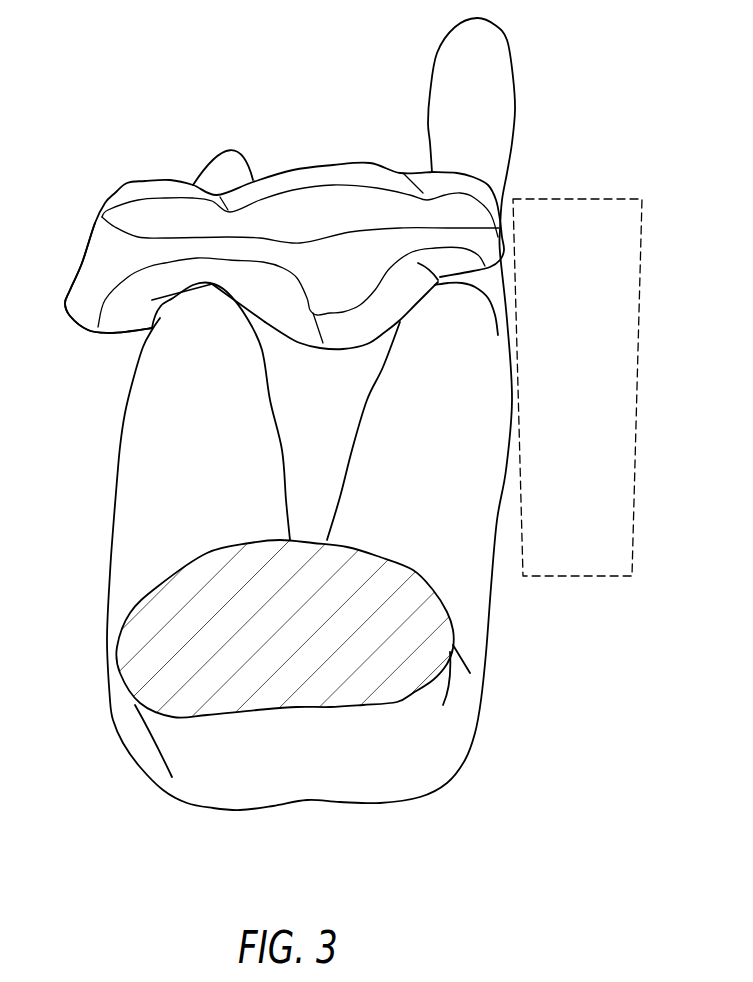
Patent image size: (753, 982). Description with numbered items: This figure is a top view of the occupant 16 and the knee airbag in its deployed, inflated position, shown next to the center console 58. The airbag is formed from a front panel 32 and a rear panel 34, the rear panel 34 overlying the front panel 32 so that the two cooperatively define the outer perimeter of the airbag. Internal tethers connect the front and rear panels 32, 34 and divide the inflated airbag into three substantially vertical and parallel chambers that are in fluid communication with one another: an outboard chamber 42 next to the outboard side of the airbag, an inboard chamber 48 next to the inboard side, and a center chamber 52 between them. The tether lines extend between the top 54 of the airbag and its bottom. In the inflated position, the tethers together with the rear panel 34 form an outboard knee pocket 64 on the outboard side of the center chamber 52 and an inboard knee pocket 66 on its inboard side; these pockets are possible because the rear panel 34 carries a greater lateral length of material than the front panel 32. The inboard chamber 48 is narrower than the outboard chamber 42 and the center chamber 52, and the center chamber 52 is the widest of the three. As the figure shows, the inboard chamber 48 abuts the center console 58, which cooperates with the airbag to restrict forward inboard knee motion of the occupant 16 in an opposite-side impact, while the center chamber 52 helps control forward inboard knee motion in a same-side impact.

The occupant 16 is at (115, 495).
The front panel 32 is at (367, 167).
The rear panel 34 is at (293, 333).
The outboard chamber 42 is at (120, 337).
The inboard chamber 48 is at (473, 272).
The center chamber 52 is at (363, 350).
The top 54 is at (320, 210).
The center console 58 is at (610, 198).
The outboard knee pocket 64 is at (216, 292).
The inboard knee pocket 66 is at (435, 288).